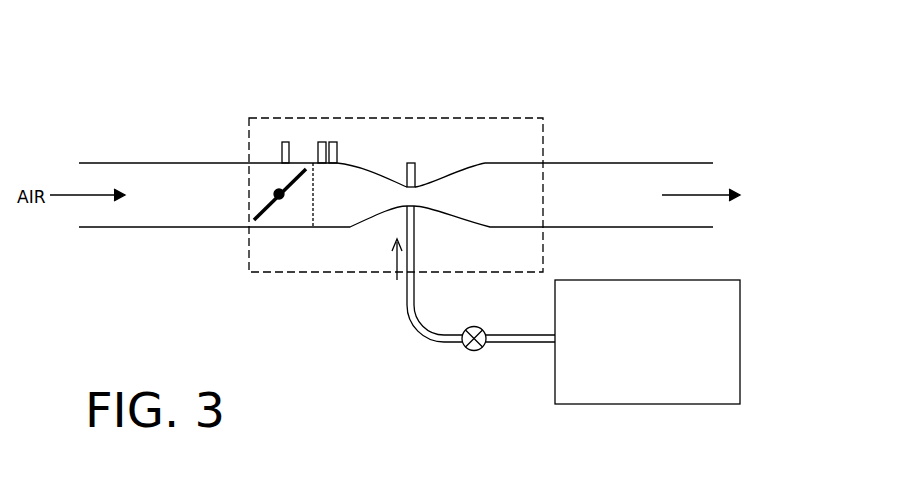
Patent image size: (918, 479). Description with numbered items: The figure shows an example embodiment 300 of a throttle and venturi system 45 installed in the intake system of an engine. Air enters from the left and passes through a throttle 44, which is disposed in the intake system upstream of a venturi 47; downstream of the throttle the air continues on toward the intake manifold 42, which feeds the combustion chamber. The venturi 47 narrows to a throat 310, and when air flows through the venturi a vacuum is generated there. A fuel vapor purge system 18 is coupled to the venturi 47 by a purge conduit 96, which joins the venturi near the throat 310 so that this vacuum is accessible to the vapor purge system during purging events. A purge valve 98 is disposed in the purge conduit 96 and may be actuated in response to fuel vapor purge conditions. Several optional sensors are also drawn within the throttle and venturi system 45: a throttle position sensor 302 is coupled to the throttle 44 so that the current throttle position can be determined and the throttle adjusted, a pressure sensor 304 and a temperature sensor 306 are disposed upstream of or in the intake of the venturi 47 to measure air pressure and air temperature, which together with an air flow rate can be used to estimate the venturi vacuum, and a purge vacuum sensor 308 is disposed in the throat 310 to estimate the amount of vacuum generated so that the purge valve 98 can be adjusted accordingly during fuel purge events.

The example embodiment 300 is at (640, 81).
The throttle position sensor 302 is at (284, 142).
The pressure sensor 304 is at (323, 142).
The temperature sensor 306 is at (332, 142).
The purge vacuum sensor 308 is at (410, 163).
The throat 310 is at (405, 196).
The throttle 44 is at (260, 160).
The throttle and venturi system 45 is at (522, 118).
The venturi 47 is at (484, 163).
The intake manifold 42 is at (741, 200).
The fuel vapor purge system 18 is at (647, 342).
The purge conduit 96 is at (413, 325).
The purge valve 98 is at (474, 351).